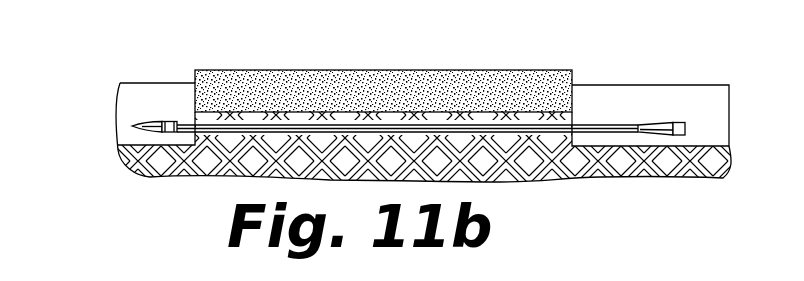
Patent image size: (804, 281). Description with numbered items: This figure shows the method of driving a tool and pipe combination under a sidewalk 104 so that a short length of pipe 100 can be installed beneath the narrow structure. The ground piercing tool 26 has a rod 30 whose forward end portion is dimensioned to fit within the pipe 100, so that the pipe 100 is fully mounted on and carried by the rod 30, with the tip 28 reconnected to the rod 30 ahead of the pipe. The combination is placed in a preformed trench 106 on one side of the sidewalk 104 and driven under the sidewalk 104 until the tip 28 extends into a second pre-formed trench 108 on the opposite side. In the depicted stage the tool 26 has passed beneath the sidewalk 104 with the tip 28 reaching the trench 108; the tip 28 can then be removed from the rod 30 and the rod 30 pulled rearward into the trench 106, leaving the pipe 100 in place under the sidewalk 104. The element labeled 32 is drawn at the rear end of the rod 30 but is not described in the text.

The ground piercing tool 26 is at (308, 123).
The tip 28 is at (148, 124).
The rod 30 is at (188, 131).
The needle hub 32 is at (682, 120).
The pipe 100 is at (532, 130).
The sidewalk 104 is at (267, 70).
The preformed trench 106 is at (685, 87).
The pre-formed trench 108 is at (152, 87).